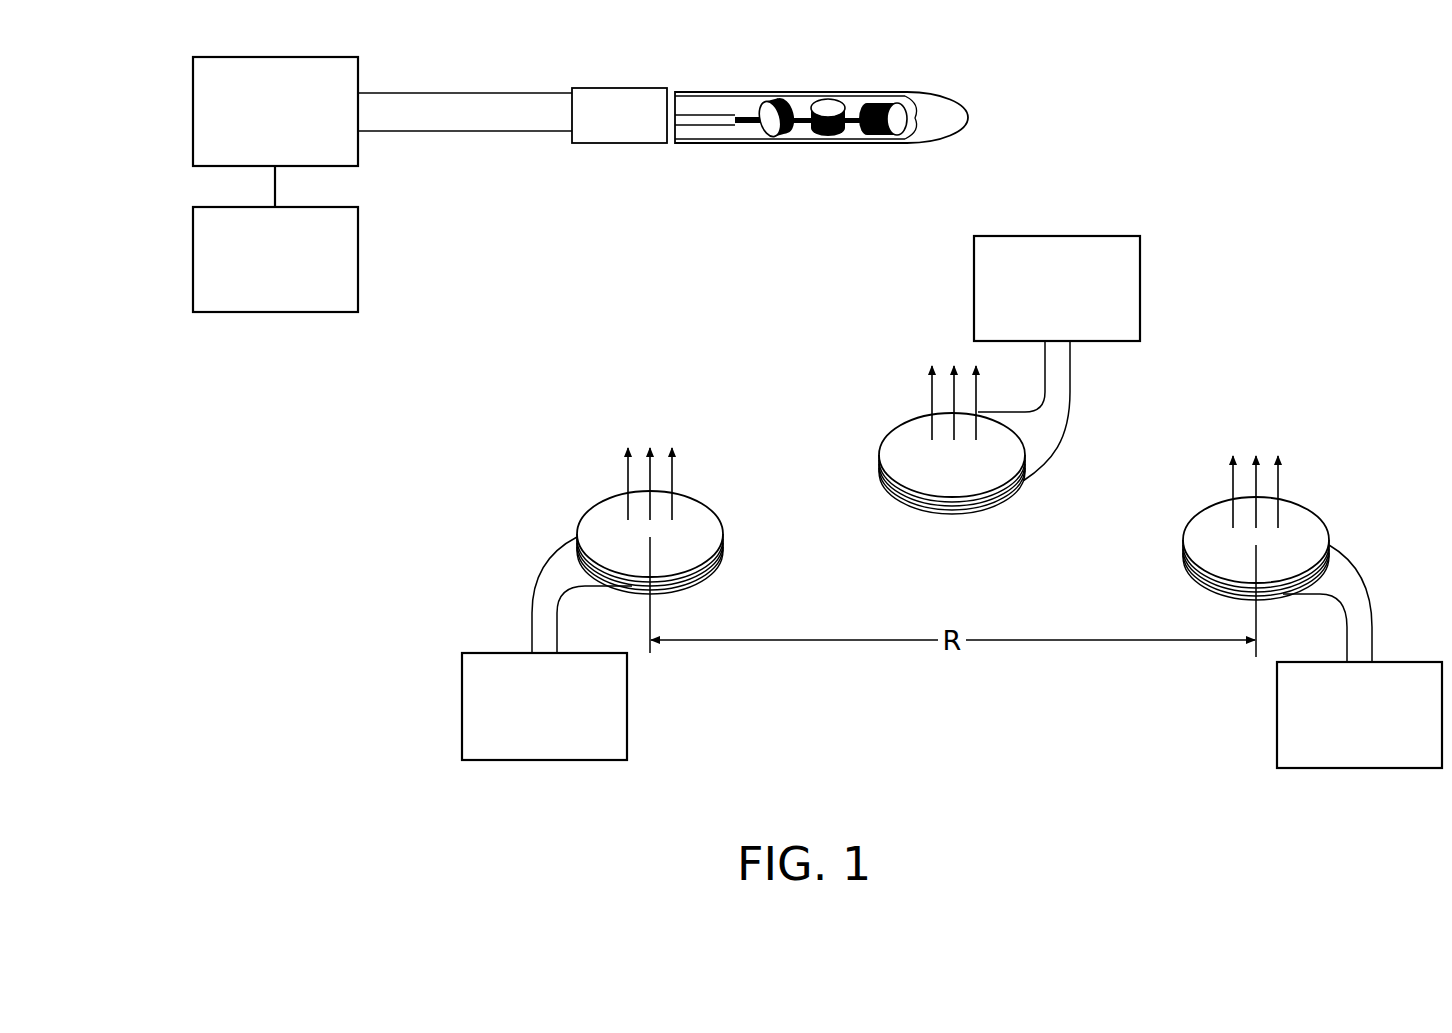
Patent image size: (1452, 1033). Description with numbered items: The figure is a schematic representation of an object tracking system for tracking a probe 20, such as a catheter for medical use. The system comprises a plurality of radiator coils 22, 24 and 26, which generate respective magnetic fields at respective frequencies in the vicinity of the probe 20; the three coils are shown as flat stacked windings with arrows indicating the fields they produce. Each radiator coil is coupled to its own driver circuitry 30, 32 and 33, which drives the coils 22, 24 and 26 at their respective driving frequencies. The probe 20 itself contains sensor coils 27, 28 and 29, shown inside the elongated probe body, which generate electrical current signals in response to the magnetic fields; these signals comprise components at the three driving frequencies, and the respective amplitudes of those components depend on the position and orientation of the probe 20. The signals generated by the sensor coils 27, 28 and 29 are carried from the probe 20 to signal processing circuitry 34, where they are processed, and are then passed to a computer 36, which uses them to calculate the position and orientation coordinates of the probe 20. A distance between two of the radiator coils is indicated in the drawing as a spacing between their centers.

The probe 20 is at (955, 138).
The radiator coil 22 is at (1190, 573).
The radiator coil 24 is at (718, 562).
The radiator coil 26 is at (896, 492).
The sensor coil 27 is at (781, 137).
The sensor coil 28 is at (840, 137).
The sensor coil 29 is at (894, 137).
The driver circuitry 30 is at (1277, 764).
The driver circuitry 32 is at (462, 738).
The driver circuitry 33 is at (1140, 267).
The signal processing circuitry 34 is at (193, 151).
The computer 36 is at (193, 296).